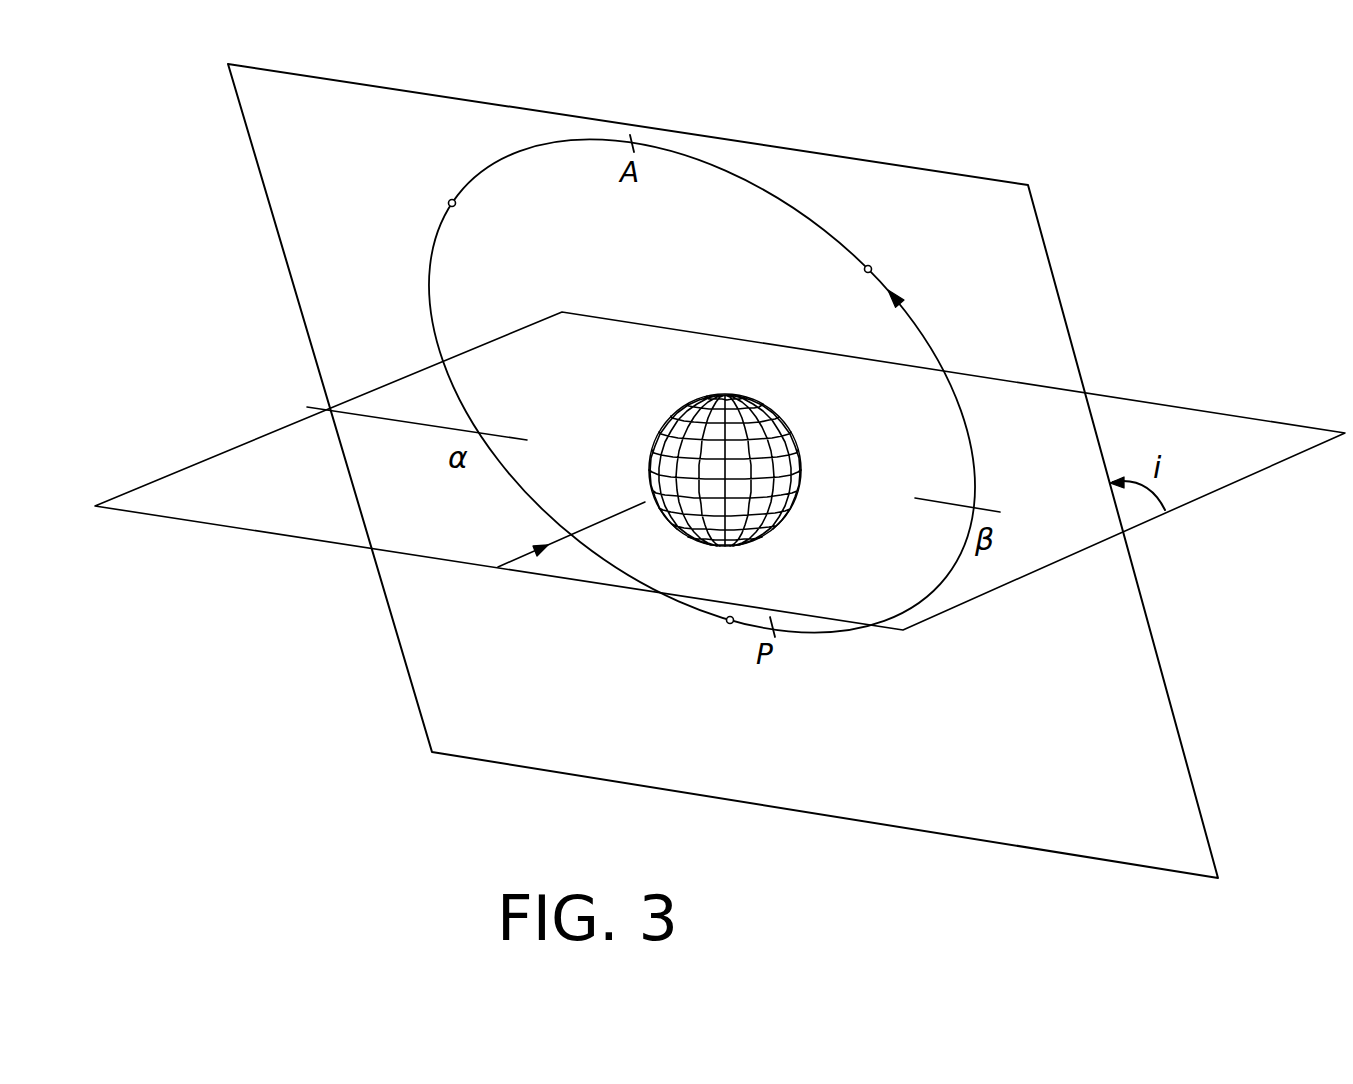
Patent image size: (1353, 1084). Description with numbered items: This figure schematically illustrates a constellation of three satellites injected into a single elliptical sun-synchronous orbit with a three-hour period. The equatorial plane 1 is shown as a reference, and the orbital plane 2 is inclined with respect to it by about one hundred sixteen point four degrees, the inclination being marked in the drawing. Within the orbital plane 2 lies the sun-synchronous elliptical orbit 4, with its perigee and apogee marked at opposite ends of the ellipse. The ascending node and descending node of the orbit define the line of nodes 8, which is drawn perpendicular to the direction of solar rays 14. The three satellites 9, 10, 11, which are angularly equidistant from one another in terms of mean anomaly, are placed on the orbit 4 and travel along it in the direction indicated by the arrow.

The equatorial plane 1 is at (720, 471).
The orbital plane 2 is at (723, 471).
The sun-synchronous elliptical orbit 4 is at (702, 386).
The line of nodes 8 is at (426, 413).
The satellite 9 is at (882, 261).
The satellite 10 is at (434, 193).
The satellite 11 is at (713, 641).
The direction of solar rays 14 is at (562, 537).